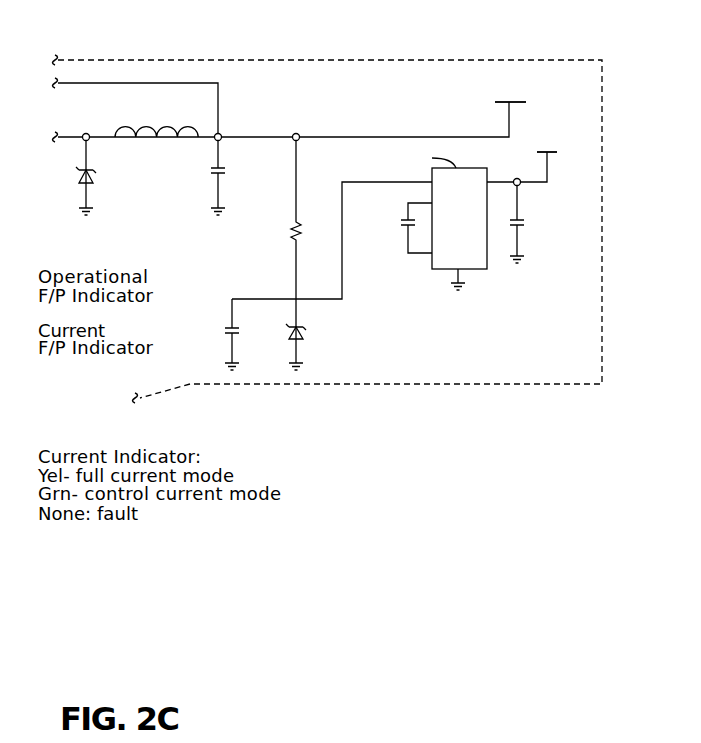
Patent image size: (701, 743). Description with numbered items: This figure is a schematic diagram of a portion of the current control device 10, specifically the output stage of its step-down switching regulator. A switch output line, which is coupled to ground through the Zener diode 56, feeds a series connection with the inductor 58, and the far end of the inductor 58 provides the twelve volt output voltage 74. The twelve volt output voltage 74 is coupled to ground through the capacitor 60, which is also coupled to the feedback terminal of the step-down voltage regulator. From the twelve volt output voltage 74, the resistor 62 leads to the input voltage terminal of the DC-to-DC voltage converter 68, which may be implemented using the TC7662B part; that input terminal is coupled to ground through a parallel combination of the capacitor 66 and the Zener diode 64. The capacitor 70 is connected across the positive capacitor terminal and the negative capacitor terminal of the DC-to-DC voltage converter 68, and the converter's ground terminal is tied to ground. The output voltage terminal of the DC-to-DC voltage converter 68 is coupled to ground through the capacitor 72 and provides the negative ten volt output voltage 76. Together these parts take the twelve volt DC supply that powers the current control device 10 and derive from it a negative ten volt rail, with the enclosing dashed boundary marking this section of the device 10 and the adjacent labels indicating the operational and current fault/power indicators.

The current control device 10 is at (525, 442).
The Zener diode 56 is at (80, 171).
The inductor 58 is at (126, 127).
The capacitor 60 is at (212, 172).
The resistor 62 is at (291, 230).
The Zener diode 64 is at (289, 331).
The capacitor 66 is at (226, 330).
The DC-to-DC voltage converter 68 is at (478, 269).
The capacitor 70 is at (404, 224).
The capacitor 72 is at (521, 224).
The 12V output voltage 74 is at (514, 102).
The negative 10V output voltage 76 is at (547, 152).